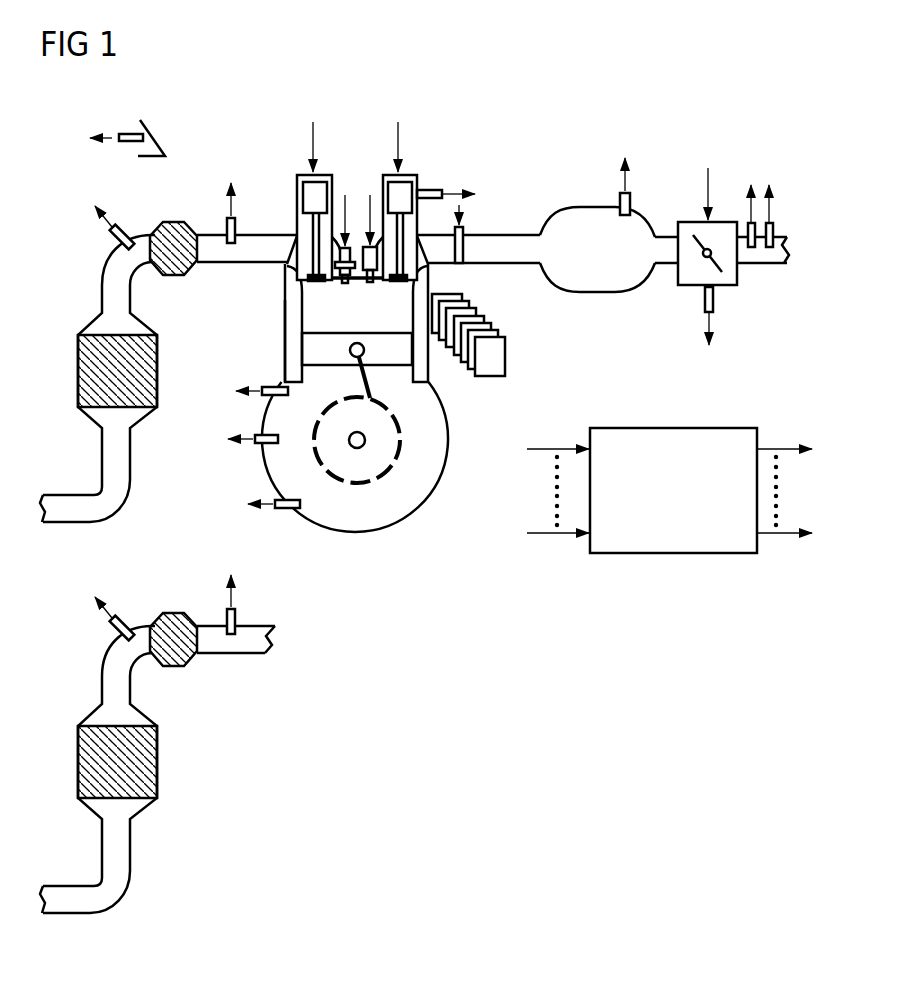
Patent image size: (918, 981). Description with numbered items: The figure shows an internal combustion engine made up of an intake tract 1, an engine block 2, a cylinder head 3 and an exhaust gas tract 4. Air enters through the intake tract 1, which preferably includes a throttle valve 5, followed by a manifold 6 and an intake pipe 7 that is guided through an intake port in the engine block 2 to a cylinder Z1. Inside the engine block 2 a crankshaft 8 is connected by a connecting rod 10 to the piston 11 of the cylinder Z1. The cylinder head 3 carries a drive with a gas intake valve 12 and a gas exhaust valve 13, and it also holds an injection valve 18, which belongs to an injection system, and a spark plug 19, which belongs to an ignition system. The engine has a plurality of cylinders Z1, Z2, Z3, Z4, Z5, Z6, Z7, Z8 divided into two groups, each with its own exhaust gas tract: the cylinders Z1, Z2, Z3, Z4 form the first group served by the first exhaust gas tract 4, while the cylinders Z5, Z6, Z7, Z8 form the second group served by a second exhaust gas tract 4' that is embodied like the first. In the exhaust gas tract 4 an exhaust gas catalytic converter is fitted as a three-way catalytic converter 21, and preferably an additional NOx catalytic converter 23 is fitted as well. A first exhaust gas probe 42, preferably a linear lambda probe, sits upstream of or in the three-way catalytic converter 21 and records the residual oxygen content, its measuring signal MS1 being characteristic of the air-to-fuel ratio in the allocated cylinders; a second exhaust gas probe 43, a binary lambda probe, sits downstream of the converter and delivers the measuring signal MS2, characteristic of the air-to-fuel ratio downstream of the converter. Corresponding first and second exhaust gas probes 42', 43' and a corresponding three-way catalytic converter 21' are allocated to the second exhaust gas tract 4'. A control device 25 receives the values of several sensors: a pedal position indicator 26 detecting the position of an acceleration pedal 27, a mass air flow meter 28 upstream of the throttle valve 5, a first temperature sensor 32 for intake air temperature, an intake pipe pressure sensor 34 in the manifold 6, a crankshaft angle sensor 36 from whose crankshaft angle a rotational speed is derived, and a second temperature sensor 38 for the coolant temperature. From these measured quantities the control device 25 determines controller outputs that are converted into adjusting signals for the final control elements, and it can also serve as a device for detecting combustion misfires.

The intake tract 1 is at (624, 305).
The engine block 2 is at (256, 309).
The cylinder head 3 is at (420, 147).
The exhaust gas tract 4 is at (98, 364).
The second exhaust gas tract 4' is at (98, 755).
The throttle valve 5 is at (690, 227).
The manifold 6 is at (634, 281).
The intake pipe 7 is at (515, 248).
The crankshaft 8 is at (366, 441).
The connecting rod 10 is at (363, 388).
The piston 11 is at (387, 358).
The gas intake valve 12 is at (400, 287).
The gas exhaust valve 13 is at (288, 288).
The injection valve 18 is at (368, 285).
The spark plug 19 is at (343, 286).
The three way catalytic converter 21 is at (173, 274).
The three-way catalytic converter of the second exhaust gas tract 21' is at (173, 665).
The NOx catalytic converter 23 is at (145, 760).
The control device 25 is at (697, 433).
The pedal position indicator 26 is at (125, 134).
The acceleration pedal 27 is at (152, 133).
The mass air flow meter 28 is at (750, 222).
The first temperature sensor 32 is at (775, 227).
The intake pipe pressure sensor 34 is at (621, 196).
The crankshaft angle sensor 36 is at (260, 443).
The second temperature sensor 38 is at (268, 388).
The first exhaust gas probe 42 is at (208, 221).
The first exhaust gas probe of the second exhaust gas tract 42' is at (208, 604).
The second exhaust gas probe 43 is at (137, 219).
The second exhaust gas probe of the second exhaust gas tract 43' is at (131, 611).
The measuring signal of the first exhaust gas probe MS1 is at (225, 185).
The measuring signal of the second exhaust gas probe MS2 is at (88, 198).
The cylinder Z1 is at (284, 313).
The cylinder Z2 is at (456, 297).
The cylinder Z3 is at (466, 305).
The cylinder Z4 is at (447, 348).
The cylinder Z5 is at (481, 323).
The cylinder Z6 is at (490, 330).
The cylinder Z7 is at (500, 341).
The cylinder Z8 is at (492, 377).